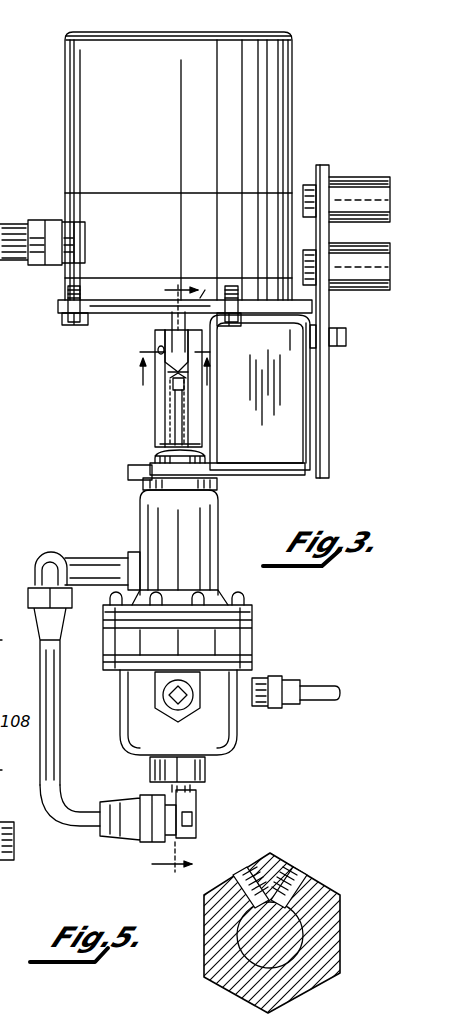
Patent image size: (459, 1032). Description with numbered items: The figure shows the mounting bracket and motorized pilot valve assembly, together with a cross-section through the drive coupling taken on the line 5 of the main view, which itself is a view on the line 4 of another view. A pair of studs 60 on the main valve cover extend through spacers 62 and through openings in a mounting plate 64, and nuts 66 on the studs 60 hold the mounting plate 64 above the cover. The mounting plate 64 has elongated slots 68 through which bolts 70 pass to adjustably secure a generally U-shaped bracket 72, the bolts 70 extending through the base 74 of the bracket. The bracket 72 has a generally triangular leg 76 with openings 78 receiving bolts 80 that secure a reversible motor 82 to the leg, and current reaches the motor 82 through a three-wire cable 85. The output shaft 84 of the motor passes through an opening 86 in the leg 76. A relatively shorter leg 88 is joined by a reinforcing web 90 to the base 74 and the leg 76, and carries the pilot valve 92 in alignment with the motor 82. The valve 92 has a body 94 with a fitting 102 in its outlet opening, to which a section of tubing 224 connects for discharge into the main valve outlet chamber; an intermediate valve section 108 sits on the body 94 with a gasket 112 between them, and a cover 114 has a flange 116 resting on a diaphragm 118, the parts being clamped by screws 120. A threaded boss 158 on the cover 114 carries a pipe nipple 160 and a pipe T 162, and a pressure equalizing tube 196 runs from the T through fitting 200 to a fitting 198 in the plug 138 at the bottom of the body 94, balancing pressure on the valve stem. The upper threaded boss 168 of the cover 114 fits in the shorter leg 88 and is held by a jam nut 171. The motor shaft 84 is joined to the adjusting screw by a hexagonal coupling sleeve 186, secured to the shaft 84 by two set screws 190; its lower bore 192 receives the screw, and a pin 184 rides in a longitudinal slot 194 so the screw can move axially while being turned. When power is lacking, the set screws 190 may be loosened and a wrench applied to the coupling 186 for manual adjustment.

In FIG. 3, the reversible motor 82 is at (62, 160).
In FIG. 3, the 3-wire cable 85 is at (8, 228).
In FIG. 3, the triangular leg 76 is at (116, 312).
In FIG. 3, the openings 78 is at (66, 303).
In FIG. 3, the bolts 80 is at (68, 326).
In FIG. 3, the opening 86 is at (205, 288).
In FIG. 3, the section line 4- 4 is at (162, 580).
In FIG. 3, the section line 5- 5 is at (174, 372).
In FIG. 3, the coupling sleeve 186 is at (153, 437).
In FIG. 5, the coupling sleeve 186 is at (205, 980).
In FIG. 3, the output shaft 84 is at (170, 322).
In FIG. 5, the output shaft 84 is at (245, 940).
In FIG. 3, the set screws 190 is at (158, 351).
In FIG. 5, the set screws 190 is at (240, 872).
In FIG. 3, the bore 192 is at (163, 385).
In FIG. 3, the pin 184 is at (186, 388).
In FIG. 3, the slot 194 is at (183, 425).
In FIG. 3, the threaded boss 168 is at (200, 444).
In FIG. 3, the jam nut 171 is at (158, 455).
In FIG. 3, the bracket 72 is at (282, 465).
In FIG. 3, the shorter leg 88 is at (256, 470).
In FIG. 3, the mounting plate 64 is at (322, 165).
In FIG. 3, the studs 60 is at (362, 182).
In FIG. 3, the spacers 62 is at (342, 180).
In FIG. 3, the nuts 66 is at (308, 184).
In FIG. 3, the bolts 70 is at (348, 337).
In FIG. 3, the reinforcing web 90 is at (292, 364).
In FIG. 3, the elongated slots 68 is at (322, 389).
In FIG. 3, the base 74 is at (306, 409).
In FIG. 3, the pilot valve 92 is at (224, 527).
In FIG. 3, the cover 114 is at (146, 506).
In FIG. 3, the threaded boss 158 is at (130, 556).
In FIG. 3, the pipe nipple 160 is at (95, 560).
In FIG. 3, the pipe T 162 is at (50, 556).
In FIG. 3, the fitting 200 is at (30, 598).
In FIG. 3, the pressure equalizing tube 196 is at (60, 732).
In FIG. 3, the fitting 198 is at (190, 812).
In FIG. 3, the screws 120 is at (196, 598).
In FIG. 3, the intermediate valve section 108 is at (248, 638).
In FIG. 3, the flange 116 is at (250, 615).
In FIG. 3, the body 94 is at (230, 743).
In FIG. 3, the fitting 102 is at (262, 708).
In FIG. 3, the tubing 224 is at (322, 688).
In FIG. 3, the plug 138 is at (206, 773).
In FIG. 3, the diaphragm 118 is at (15, 672).
In FIG. 3, the gasket 112 is at (15, 760).